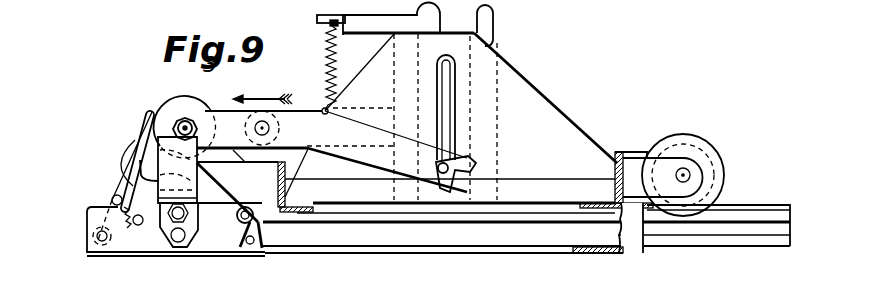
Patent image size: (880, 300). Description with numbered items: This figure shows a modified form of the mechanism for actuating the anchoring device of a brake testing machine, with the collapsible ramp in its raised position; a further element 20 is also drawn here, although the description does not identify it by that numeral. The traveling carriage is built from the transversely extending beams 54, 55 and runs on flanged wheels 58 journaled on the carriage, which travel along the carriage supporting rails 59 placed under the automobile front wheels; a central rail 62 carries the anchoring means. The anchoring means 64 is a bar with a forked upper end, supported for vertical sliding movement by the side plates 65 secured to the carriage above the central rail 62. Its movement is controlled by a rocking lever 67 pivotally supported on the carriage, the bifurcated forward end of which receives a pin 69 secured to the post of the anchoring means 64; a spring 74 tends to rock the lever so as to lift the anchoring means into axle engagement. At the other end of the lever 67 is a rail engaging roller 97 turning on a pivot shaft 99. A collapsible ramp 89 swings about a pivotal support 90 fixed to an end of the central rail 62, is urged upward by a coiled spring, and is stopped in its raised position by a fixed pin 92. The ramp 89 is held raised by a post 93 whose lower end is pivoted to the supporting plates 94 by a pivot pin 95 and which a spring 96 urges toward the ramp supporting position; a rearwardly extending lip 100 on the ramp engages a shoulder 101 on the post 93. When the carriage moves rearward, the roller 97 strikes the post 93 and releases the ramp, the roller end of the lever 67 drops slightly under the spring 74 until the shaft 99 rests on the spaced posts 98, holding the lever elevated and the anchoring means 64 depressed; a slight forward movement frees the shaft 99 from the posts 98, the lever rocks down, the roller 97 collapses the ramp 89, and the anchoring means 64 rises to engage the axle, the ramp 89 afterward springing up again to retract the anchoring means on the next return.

The rod 20 is at (453, 68).
The transversely extending beam 54 is at (643, 252).
The transversely extending beam 55 is at (287, 190).
The flanged wheel 58 is at (717, 148).
The carriage supporting rail 59 is at (760, 205).
The central rail 62 is at (472, 242).
The anchoring means 64 is at (497, 18).
The side plate 65 is at (548, 103).
The rocking lever 67 is at (227, 110).
The pin 69 is at (452, 165).
The spring 74 is at (322, 66).
The collapsible ramp 89 is at (220, 200).
The pivotal support 90 is at (258, 224).
The fixed pin 92 is at (264, 252).
The post 93 is at (125, 172).
The supporting plate 94 is at (131, 245).
The pivot pin 95 is at (96, 237).
The spring 96 is at (110, 208).
The rail engaging roller 97 is at (213, 95).
The spaced post 98 is at (215, 172).
The pivot shaft 99 is at (183, 123).
The rearwardly extending lip 100 is at (125, 176).
The shoulder 101 is at (133, 142).